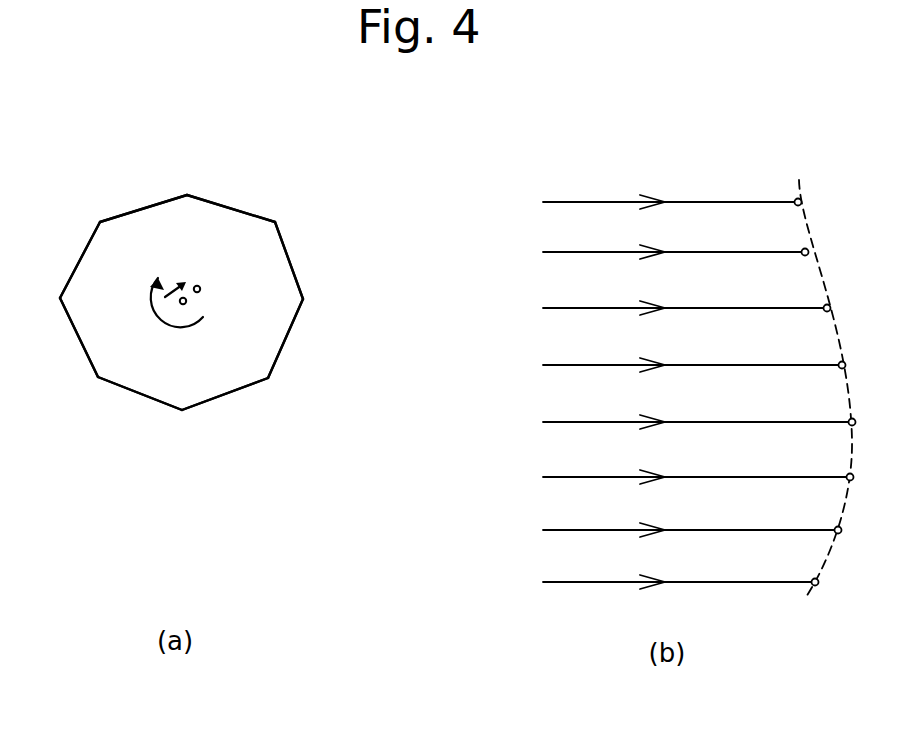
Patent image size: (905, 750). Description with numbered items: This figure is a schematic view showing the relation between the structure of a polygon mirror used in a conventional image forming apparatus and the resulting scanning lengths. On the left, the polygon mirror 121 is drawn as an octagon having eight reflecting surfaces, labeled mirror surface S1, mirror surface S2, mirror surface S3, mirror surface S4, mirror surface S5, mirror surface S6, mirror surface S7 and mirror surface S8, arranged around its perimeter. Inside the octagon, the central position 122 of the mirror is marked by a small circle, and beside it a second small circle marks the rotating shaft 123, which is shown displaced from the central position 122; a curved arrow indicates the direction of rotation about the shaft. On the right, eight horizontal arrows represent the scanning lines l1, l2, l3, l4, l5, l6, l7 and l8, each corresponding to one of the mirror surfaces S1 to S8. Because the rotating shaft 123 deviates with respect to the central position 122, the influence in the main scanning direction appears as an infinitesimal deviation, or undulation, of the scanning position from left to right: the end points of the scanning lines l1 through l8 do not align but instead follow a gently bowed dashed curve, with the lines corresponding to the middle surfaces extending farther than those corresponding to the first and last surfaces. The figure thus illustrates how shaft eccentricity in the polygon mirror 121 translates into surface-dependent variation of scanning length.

The polygon mirror 121 is at (175, 393).
The central position 122 is at (178, 307).
The rotating shaft 123 is at (202, 279).
The mirror surface S1 is at (67, 260).
The mirror surface S2 is at (67, 337).
The mirror surface S3 is at (139, 402).
The mirror surface S4 is at (225, 404).
The mirror surface S5 is at (300, 338).
The mirror surface S6 is at (304, 260).
The mirror surface S7 is at (231, 196).
The mirror surface S8 is at (141, 196).
The scanning line l1 is at (652, 203).
The scanning line l2 is at (655, 253).
The scanning line l3 is at (666, 309).
The scanning line l4 is at (674, 366).
The scanning line l5 is at (679, 423).
The scanning line l6 is at (678, 478).
The scanning line l7 is at (672, 531).
The scanning line l8 is at (660, 583).